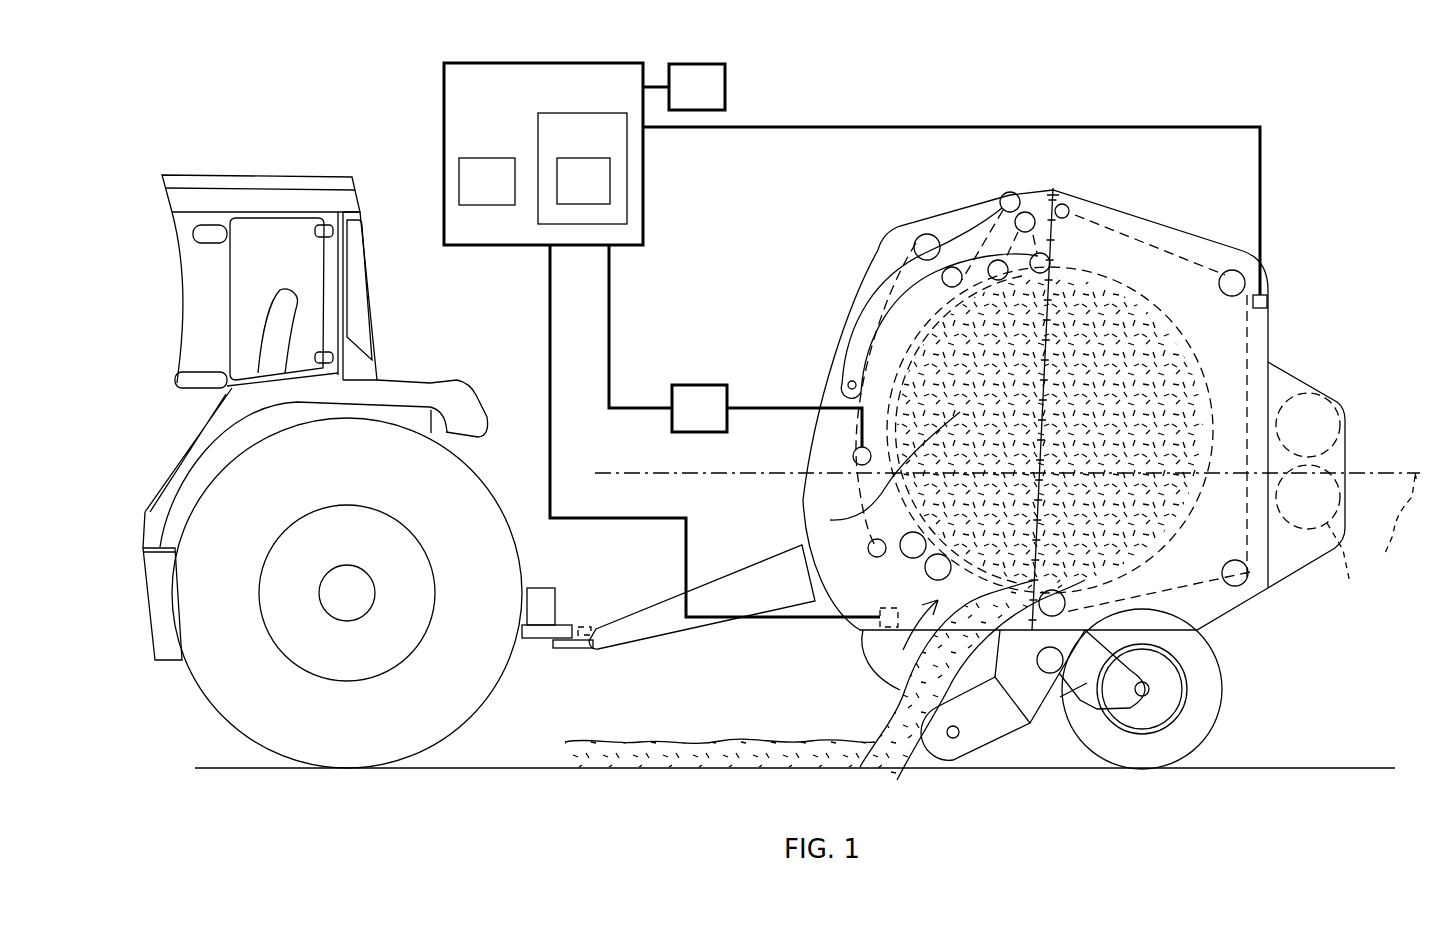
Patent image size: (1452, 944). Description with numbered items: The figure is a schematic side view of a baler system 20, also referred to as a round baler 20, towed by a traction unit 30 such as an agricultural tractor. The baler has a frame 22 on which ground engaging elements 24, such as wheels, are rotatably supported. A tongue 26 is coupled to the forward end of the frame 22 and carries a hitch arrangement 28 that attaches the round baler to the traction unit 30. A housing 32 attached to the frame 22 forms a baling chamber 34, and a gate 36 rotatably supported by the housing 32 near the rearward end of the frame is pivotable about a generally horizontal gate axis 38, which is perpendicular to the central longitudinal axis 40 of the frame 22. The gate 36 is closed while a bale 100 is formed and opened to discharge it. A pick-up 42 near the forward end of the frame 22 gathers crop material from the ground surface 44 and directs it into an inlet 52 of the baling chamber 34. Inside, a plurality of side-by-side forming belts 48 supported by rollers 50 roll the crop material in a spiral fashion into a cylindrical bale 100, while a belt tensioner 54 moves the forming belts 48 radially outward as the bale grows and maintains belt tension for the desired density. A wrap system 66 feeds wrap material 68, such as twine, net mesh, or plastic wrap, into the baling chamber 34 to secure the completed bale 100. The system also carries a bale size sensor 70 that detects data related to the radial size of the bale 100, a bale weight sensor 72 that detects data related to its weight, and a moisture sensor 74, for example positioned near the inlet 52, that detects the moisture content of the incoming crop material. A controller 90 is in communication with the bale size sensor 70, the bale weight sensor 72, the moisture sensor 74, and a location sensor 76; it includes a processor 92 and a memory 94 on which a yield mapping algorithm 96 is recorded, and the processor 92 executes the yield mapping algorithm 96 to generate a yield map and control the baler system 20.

The baler system 20 is at (993, 470).
The frame 22 is at (1060, 682).
The ground engaging elements 24 is at (1207, 700).
The tongue 26 is at (617, 622).
The hitch arrangement 28 is at (563, 650).
The traction unit 30 is at (226, 178).
The housing 32 is at (1143, 222).
The baling chamber 34 is at (830, 520).
The gate 36 is at (1268, 338).
The gate axis 38 is at (1057, 192).
The central longitudinal axis 40 is at (1400, 531).
The pick-up 42 is at (905, 765).
The ground surface 44 is at (1333, 768).
The forming belts 48 is at (1247, 370).
The rollers 50 is at (918, 240).
The inlet 52 is at (903, 670).
The belt tensioner 54 is at (905, 300).
The wrap system 66 is at (1345, 437).
The wrap material 68 is at (1350, 570).
The bale size sensor 70 is at (684, 421).
The bale weight sensor 72 is at (1268, 303).
The moisture sensor 74 is at (887, 628).
The location sensor 76 is at (682, 101).
The controller 90 is at (543, 154).
The processor 92 is at (472, 195).
The memory 94 is at (582, 168).
The yield mapping algorithm 96 is at (568, 195).
The bale 100 is at (1105, 317).